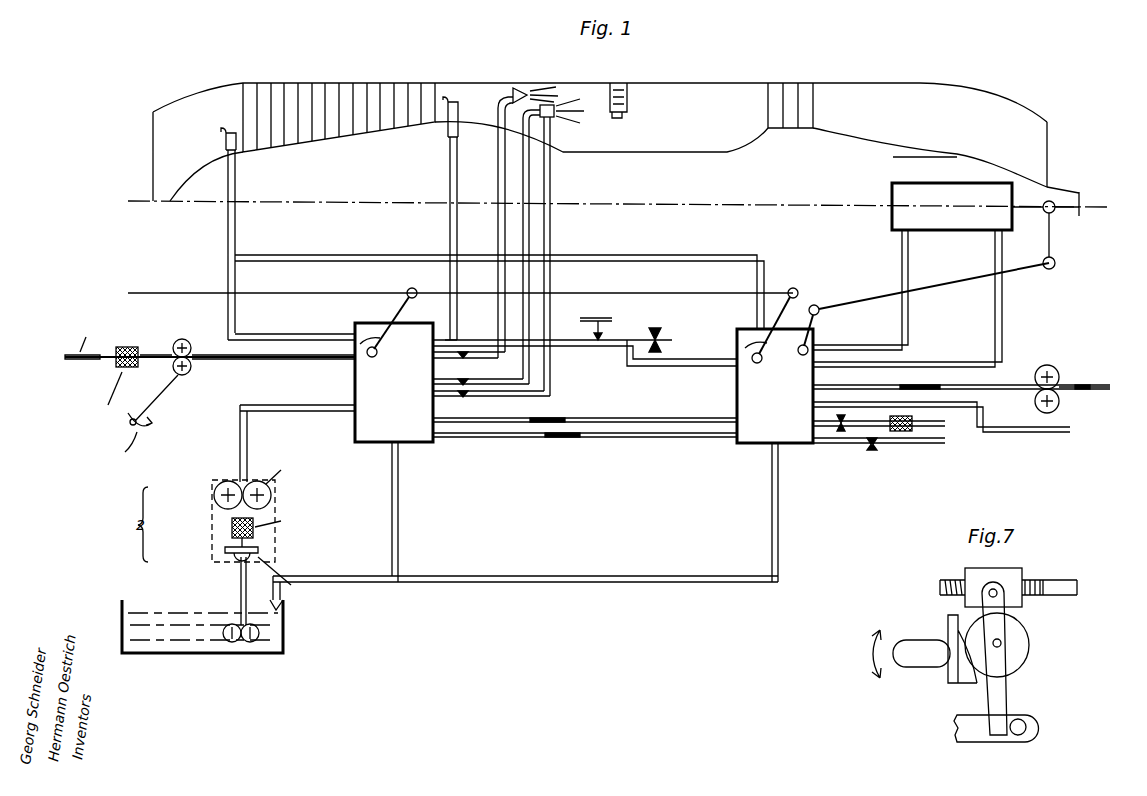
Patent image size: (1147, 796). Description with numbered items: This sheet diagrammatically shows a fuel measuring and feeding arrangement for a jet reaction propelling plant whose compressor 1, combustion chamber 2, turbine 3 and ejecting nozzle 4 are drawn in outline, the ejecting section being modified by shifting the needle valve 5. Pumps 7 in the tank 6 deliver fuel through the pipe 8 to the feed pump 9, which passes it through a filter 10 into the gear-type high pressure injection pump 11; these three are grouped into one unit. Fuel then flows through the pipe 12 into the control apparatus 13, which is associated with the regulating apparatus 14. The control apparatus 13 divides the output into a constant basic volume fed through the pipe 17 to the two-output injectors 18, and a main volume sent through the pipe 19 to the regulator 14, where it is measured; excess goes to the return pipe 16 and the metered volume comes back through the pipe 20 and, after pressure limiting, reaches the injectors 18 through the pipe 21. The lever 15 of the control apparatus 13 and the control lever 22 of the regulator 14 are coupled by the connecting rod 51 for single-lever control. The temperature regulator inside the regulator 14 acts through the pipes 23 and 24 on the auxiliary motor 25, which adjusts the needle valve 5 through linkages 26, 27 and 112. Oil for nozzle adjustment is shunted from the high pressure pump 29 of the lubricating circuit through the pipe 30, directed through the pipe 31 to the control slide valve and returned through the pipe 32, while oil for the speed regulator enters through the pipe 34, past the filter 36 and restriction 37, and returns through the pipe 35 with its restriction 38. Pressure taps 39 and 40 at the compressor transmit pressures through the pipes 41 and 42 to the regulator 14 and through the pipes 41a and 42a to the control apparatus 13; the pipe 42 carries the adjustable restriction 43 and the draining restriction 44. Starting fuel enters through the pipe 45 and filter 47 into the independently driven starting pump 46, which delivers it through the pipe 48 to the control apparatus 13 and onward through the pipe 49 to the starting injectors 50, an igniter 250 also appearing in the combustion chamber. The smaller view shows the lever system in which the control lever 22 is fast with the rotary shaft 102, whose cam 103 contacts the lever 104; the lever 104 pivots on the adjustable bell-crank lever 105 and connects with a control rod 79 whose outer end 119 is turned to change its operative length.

In FIG. 1, the compressor 1 is at (328, 92).
In FIG. 1, the combustion chamber 2 is at (616, 142).
In FIG. 1, the turbine 3 is at (790, 98).
In FIG. 1, the ejecting nozzle 4 is at (1027, 122).
In FIG. 1, the needle valve 5 is at (1073, 190).
In FIG. 1, the tank 6 is at (177, 618).
In FIG. 1, the pumps 7 is at (262, 628).
In FIG. 1, the pipe 8 is at (239, 577).
In FIG. 1, the feed pump 9 is at (225, 549).
In FIG. 1, the filter 10 is at (232, 527).
In FIG. 1, the high pressure injection pump 11 is at (212, 497).
In FIG. 1, the pipe 12 is at (285, 412).
In FIG. 1, the control apparatus 13 is at (394, 382).
In FIG. 1, the regulating apparatus 14 is at (775, 386).
In FIG. 1, the lever 15 is at (405, 297).
In FIG. 1, the return pipe 16 is at (330, 576).
In FIG. 1, the pipe 17 is at (530, 221).
In FIG. 1, the injectors 18 is at (557, 117).
In FIG. 1, the pipe 19 is at (533, 438).
In FIG. 1, the pipe 20 is at (590, 418).
In FIG. 1, the pipe 21 is at (550, 278).
In FIG. 1, the control lever 22 is at (757, 313).
In FIG. 1, the pipe 23 is at (906, 320).
In FIG. 1, the pipe 24 is at (997, 327).
In FIG. 1, the auxiliary motor 25 is at (952, 206).
In FIG. 1, the linkage 26 is at (1050, 235).
In FIG. 1, the linkage 27 is at (872, 295).
In FIG. 1, the high pressure pump 29 is at (1047, 365).
In FIG. 1, the pipe 30 is at (1082, 385).
In FIG. 1, the pipe 31 is at (1015, 384).
In FIG. 1, the pipe 32 is at (1057, 432).
In FIG. 1, the pipe 34 is at (947, 425).
In FIG. 1, the return pipe 35 is at (934, 445).
In FIG. 1, the filter 36 is at (912, 420).
In FIG. 1, the restriction 37 is at (843, 421).
In FIG. 1, the restriction 38 is at (873, 450).
In FIG. 1, the pressure tap 39 is at (221, 134).
In FIG. 1, the pressure tap 40 is at (460, 100).
In FIG. 1, the pipe 41 is at (236, 222).
In FIG. 1, the pipe 41a is at (270, 334).
In FIG. 1, the pipe 42 is at (448, 222).
In FIG. 1, the pipe 42a is at (445, 338).
In FIG. 1, the adjustable restriction 43 is at (596, 319).
In FIG. 1, the draining restriction 44 is at (657, 329).
In FIG. 1, the pipe 45 is at (80, 363).
In FIG. 1, the starting pump 46 is at (183, 377).
In FIG. 1, the filter 47 is at (124, 370).
In FIG. 1, the pipe 48 is at (270, 361).
In FIG. 1, the pipe 49 is at (498, 178).
In FIG. 1, the starting injectors 50 is at (518, 88).
In FIG. 1, the connecting rod 51 is at (168, 293).
In FIG. 1, the linkage 112 is at (820, 316).
In FIG. 1, the igniter 250 is at (622, 88).
In FIG. 7, the shaft 79 is at (1021, 579).
In FIG. 7, the rotary shaft 102 is at (927, 660).
In FIG. 7, the cam 103 is at (958, 680).
In FIG. 7, the lever 104 is at (1008, 695).
In FIG. 7, the adjustable bell-crank lever 105 is at (990, 736).
In FIG. 7, the outer end of rod 119 is at (947, 578).